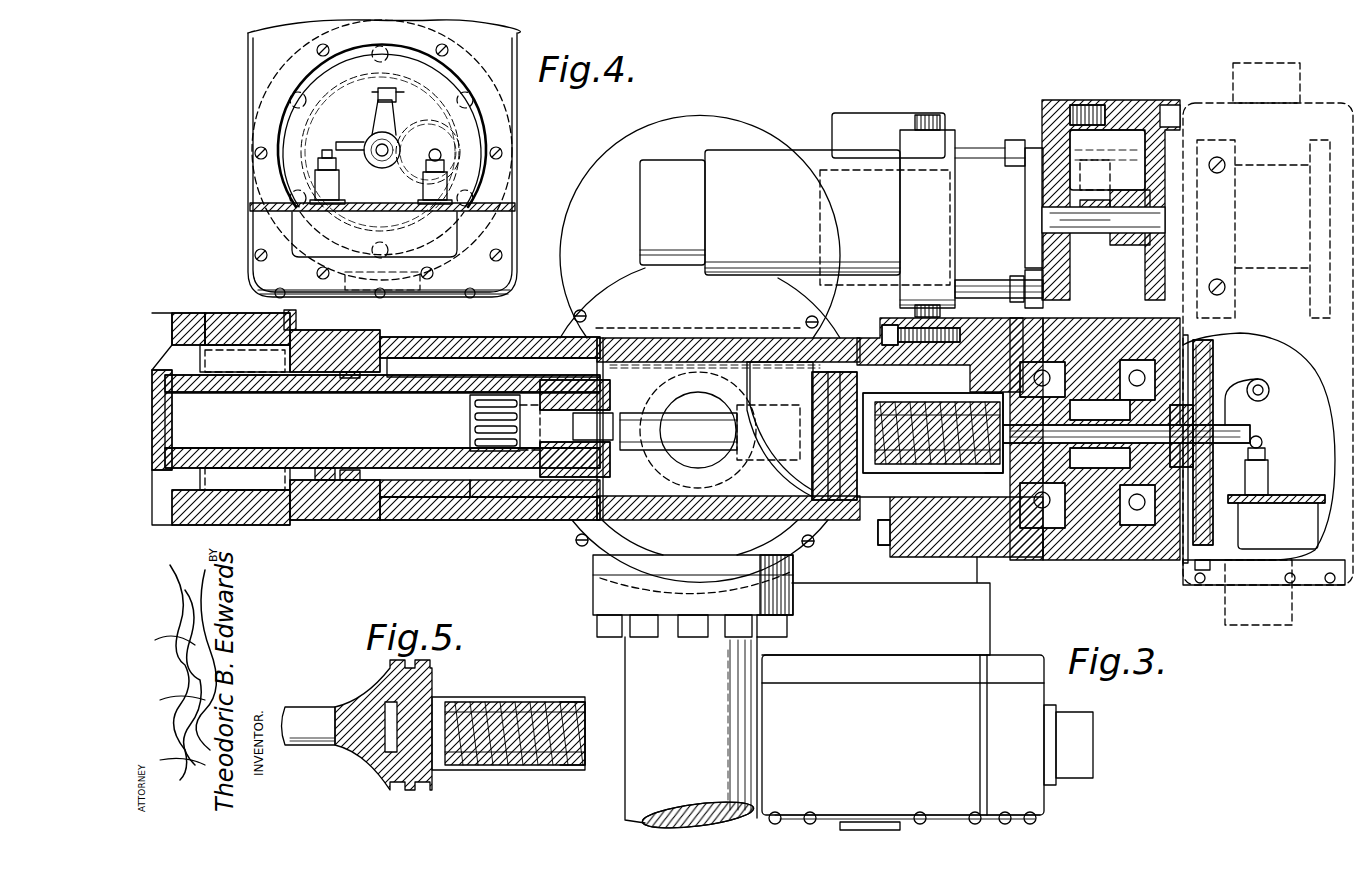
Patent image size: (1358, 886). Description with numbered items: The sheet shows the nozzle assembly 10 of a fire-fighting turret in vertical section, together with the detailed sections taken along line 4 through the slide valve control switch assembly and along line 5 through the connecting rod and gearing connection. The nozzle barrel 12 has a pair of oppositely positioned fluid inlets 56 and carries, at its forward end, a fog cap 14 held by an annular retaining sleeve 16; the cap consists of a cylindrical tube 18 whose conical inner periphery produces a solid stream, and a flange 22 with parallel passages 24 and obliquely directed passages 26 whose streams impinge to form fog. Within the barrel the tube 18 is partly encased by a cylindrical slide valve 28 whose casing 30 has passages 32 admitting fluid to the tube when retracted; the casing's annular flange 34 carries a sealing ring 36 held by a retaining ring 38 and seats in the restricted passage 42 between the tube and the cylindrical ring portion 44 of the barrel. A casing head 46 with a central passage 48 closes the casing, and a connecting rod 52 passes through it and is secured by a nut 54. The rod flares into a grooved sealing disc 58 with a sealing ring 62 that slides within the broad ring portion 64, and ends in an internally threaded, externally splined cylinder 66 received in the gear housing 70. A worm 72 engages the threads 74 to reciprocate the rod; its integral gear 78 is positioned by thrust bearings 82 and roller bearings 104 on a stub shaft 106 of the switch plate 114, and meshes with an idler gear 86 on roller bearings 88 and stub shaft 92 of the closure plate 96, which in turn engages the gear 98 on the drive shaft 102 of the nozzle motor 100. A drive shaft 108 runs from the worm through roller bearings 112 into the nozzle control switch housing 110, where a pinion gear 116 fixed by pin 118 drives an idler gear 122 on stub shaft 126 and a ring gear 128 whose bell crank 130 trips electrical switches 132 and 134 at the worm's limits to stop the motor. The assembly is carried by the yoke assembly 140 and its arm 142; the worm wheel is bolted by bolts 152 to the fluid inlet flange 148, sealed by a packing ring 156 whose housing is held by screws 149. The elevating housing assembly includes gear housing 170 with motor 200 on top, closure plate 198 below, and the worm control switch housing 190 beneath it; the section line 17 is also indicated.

In FIG. 3, the section line 4— 4 is at (1264, 299).
In FIG. 3, the section line 5— 5 is at (730, 446).
In FIG. 3, the nozzle assembly 10 is at (541, 335).
In FIG. 3, the nozzle barrel 12 is at (478, 341).
In FIG. 3, the fog cap 14 is at (182, 340).
In FIG. 3, the annular retaining sleeve 16 is at (242, 345).
In FIG. 3, the section line 17- 17 is at (1091, 78).
In FIG. 3, the cylindrical tube 18 is at (242, 393).
In FIG. 3, the flange 22 is at (185, 579).
In FIG. 3, the passages 24 is at (205, 321).
In FIG. 3, the passages 26 is at (170, 375).
In FIG. 3, the cylindrical slide valve 28 is at (418, 501).
In FIG. 3, the casing 30 is at (445, 483).
In FIG. 4, the passages 32 is at (356, 134).
In FIG. 3, the passages 32 is at (470, 441).
In FIG. 3, the annular flange 34 is at (340, 496).
In FIG. 3, the sealing ring 36 is at (320, 521).
In FIG. 3, the retaining ring 38 is at (304, 501).
In FIG. 3, the restricted passage 42 is at (368, 353).
In FIG. 3, the cylindrical ring portion 44 is at (335, 340).
In FIG. 3, the casing head 46 is at (536, 521).
In FIG. 3, the passage 48 is at (728, 429).
In FIG. 5, the connecting rod 52 is at (322, 712).
In FIG. 3, the connecting rod 52 is at (688, 449).
In FIG. 3, the nut 54 is at (548, 476).
In FIG. 3, the fluid inlets 56 is at (665, 456).
In FIG. 5, the grooved sealing disc 58 is at (378, 760).
In FIG. 3, the grooved sealing disc 58 is at (815, 393).
In FIG. 3, the sealing ring 62 is at (870, 508).
In FIG. 3, the broad ring portion 64 is at (870, 352).
In FIG. 5, the internally threaded cylinder 66 is at (505, 690).
In FIG. 3, the internally threaded cylinder 66 is at (933, 445).
In FIG. 3, the gear housing 70 is at (1012, 550).
In FIG. 3, the worm 72 is at (920, 550).
In FIG. 5, the threads 74 is at (552, 700).
In FIG. 3, the threads 74 is at (960, 548).
In FIG. 3, the gear 78 is at (1040, 552).
In FIG. 3, the thrust bearings 82 is at (1020, 330).
In FIG. 3, the idler gear 86 is at (1030, 240).
In FIG. 3, the roller bearings 88 is at (1030, 270).
In FIG. 3, the stub shaft 92 is at (1010, 279).
In FIG. 3, the gear housing closure plate 96 is at (1160, 143).
In FIG. 3, the gear 98 is at (1070, 179).
In FIG. 3, the nozzle motor 100 is at (795, 217).
In FIG. 3, the drive shaft 102 is at (1160, 215).
In FIG. 3, the roller bearings 104 is at (1160, 193).
In FIG. 3, the stub shaft 106 is at (1085, 548).
In FIG. 4, the drive shaft 108 is at (372, 167).
In FIG. 3, the drive shaft 108 is at (1232, 435).
In FIG. 4, the nozzle control switch housing 110 is at (518, 108).
In FIG. 3, the nozzle control switch housing 110 is at (1345, 101).
In FIG. 3, the roller bearings 112 is at (1276, 522).
In FIG. 4, the switch plate 114 is at (292, 76).
In FIG. 3, the switch plate 114 is at (1172, 575).
In FIG. 4, the pinion gear 116 is at (420, 166).
In FIG. 3, the pinion gear 116 is at (1205, 386).
In FIG. 3, the pin 118 is at (1196, 463).
In FIG. 4, the idler gear 122 is at (502, 128).
In FIG. 3, the idler gear 122 is at (1243, 402).
In FIG. 4, the stub shaft 126 is at (470, 192).
In FIG. 4, the ring gear 128 is at (300, 136).
In FIG. 3, the ring gear 128 is at (1210, 575).
In FIG. 4, the bell crank 130 is at (378, 95).
In FIG. 3, the bell crank 130 is at (1272, 389).
In FIG. 4, the electrical switch 132 is at (318, 183).
In FIG. 4, the electrical switch 134 is at (480, 208).
In FIG. 3, the electrical switch 134 is at (1270, 473).
In FIG. 3, the yoke assembly 140 is at (618, 789).
In FIG. 3, the arm 142 is at (620, 541).
In FIG. 3, the fluid inlet flange 148 is at (642, 303).
In FIG. 3, the screws 149 is at (595, 318).
In FIG. 3, the bolts 152 is at (666, 332).
In FIG. 3, the packing ring 156 is at (612, 302).
In FIG. 3, the gear housing 170 is at (876, 606).
In FIG. 3, the worm control switch housing 190 is at (931, 767).
In FIG. 3, the closure plate 198 is at (822, 573).
In FIG. 3, the motor 200 is at (842, 148).